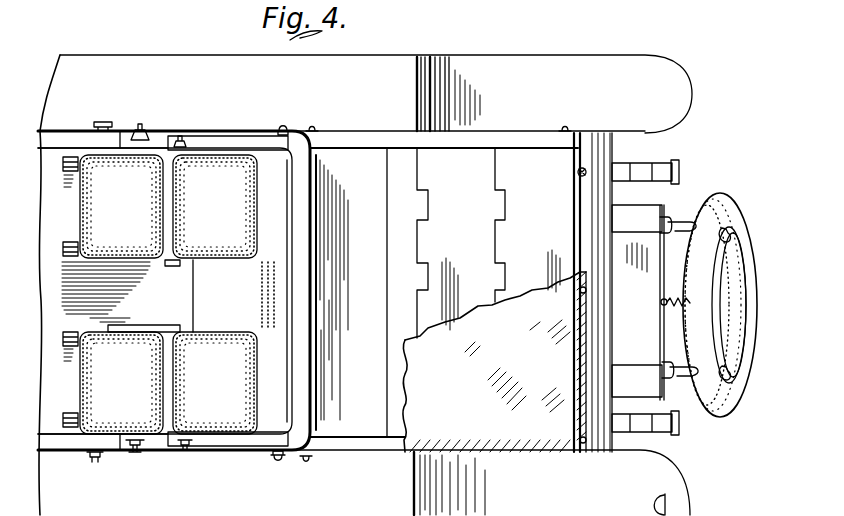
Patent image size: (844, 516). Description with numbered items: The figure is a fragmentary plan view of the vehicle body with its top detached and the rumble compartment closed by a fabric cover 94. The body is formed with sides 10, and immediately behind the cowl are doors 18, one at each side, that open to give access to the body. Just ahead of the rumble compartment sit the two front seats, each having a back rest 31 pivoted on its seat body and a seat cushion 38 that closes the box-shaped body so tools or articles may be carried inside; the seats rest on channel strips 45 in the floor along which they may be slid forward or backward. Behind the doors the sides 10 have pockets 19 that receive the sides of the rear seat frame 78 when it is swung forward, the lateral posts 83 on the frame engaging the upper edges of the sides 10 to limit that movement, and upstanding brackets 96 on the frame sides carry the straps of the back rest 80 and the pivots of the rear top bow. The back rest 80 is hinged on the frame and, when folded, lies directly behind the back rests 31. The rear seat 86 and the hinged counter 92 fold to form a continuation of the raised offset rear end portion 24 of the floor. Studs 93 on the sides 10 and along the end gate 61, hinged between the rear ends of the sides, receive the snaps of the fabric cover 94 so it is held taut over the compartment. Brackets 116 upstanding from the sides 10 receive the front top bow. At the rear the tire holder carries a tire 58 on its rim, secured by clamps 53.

The sides 10 is at (456, 137).
The doors 18 is at (72, 138).
The pockets 19 is at (300, 312).
The raised offset rear end portion 24 is at (552, 292).
The back rest 31 is at (223, 294).
The seat cushion 38 is at (121, 294).
The channel strips 45 is at (72, 242).
The clamps 53 is at (734, 243).
The tire 58 is at (722, 206).
The end gate 61 is at (616, 292).
The rear seat frame 78 is at (236, 144).
The back rest 80 is at (295, 270).
The lateral posts 83 is at (284, 126).
The rear seat 86 is at (341, 292).
The counter 92 is at (461, 243).
The studs 93 is at (562, 127).
The fabric cover 94 is at (494, 362).
The brackets 96 is at (186, 135).
The brackets 116 is at (148, 132).